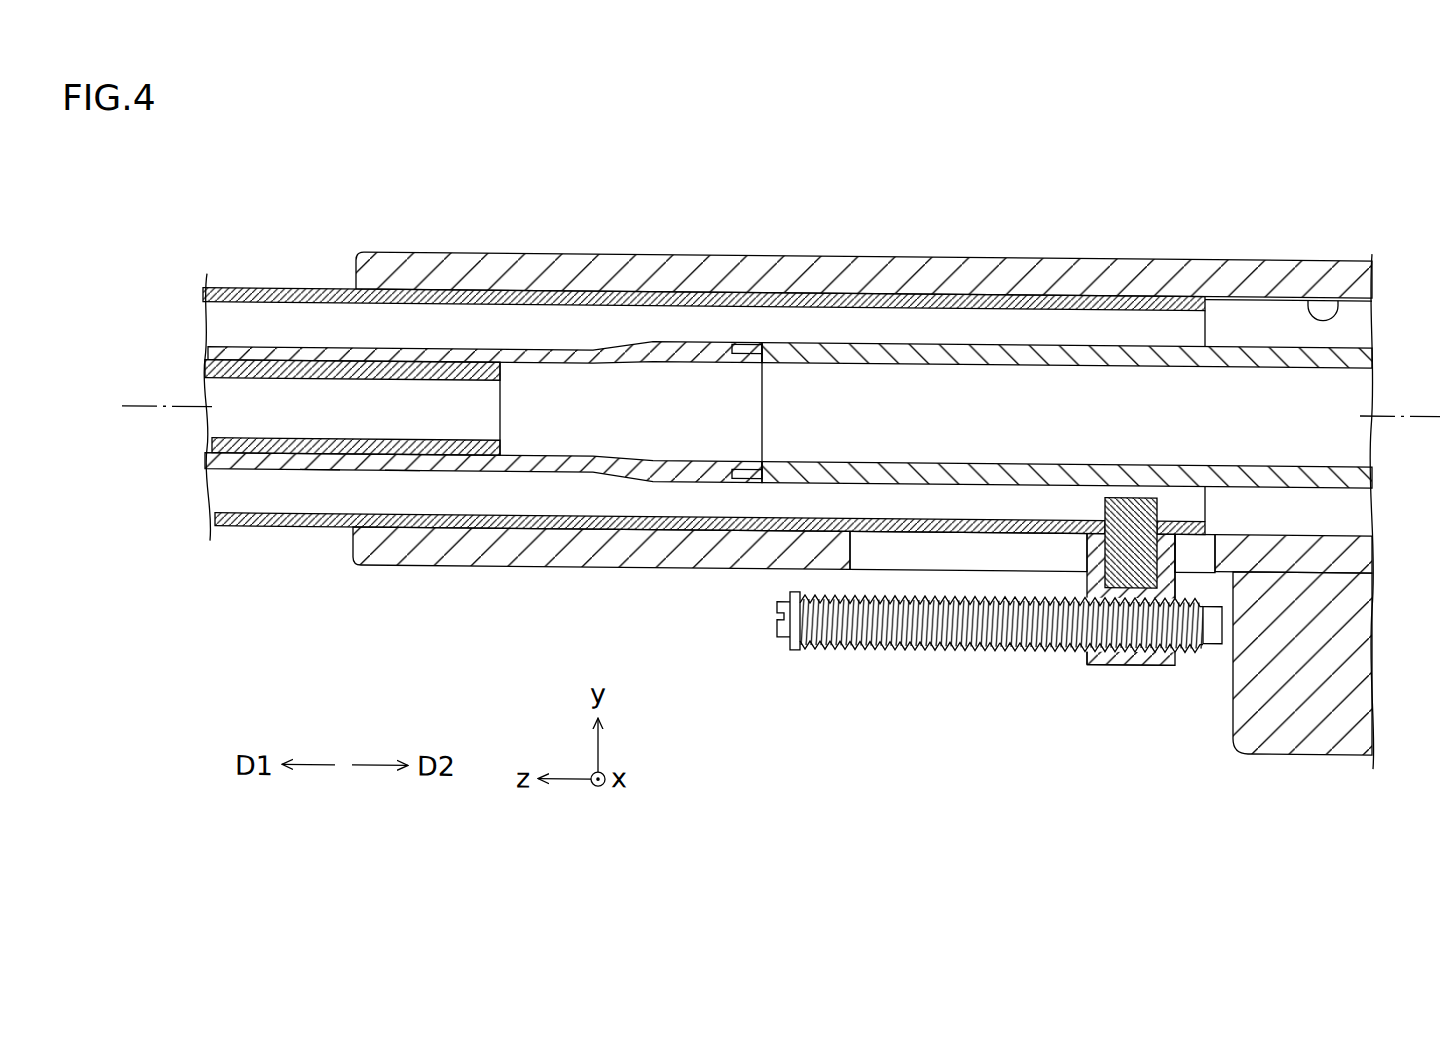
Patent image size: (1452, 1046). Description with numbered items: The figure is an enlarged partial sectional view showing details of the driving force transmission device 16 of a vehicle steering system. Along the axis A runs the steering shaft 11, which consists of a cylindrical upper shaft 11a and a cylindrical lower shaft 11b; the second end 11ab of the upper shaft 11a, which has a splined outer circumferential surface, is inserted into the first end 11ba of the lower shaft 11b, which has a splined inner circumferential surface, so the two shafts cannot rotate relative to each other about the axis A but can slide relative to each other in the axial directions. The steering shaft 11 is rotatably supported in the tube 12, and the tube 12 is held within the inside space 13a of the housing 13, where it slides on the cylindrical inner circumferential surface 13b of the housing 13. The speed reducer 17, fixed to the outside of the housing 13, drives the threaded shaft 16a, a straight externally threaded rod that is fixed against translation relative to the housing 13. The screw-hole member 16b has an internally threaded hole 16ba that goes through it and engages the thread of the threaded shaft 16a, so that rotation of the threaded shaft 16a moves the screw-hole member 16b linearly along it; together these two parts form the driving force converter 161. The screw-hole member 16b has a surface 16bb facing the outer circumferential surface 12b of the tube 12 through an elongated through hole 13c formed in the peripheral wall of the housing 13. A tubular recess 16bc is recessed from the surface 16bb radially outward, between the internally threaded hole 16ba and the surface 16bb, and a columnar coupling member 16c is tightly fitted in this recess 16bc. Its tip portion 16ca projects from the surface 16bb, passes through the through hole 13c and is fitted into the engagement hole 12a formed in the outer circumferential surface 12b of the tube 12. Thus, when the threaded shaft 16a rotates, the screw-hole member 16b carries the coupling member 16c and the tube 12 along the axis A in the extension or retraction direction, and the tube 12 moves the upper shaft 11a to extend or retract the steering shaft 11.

The steering shaft 11 is at (265, 345).
The upper shaft 11a is at (257, 455).
The second end of the upper shaft 11ab is at (520, 456).
The lower shaft 11b is at (403, 471).
The first end of the lower shaft 11ba is at (317, 471).
The tube 12 is at (297, 289).
The engagement hole 12a is at (1145, 491).
The outer circumferential surface of the tube 12b is at (678, 565).
The housing 13 is at (422, 252).
The inside space 13a is at (1260, 310).
The inner circumferential surface of the housing 13b is at (1340, 288).
The through hole 13c is at (870, 523).
The driving force transmission device 16 is at (997, 674).
The threaded shaft 16a is at (952, 645).
The screw-hole member 16b is at (1175, 652).
The internally threaded hole 16ba is at (1113, 641).
The surface of the screw-hole member 16bb is at (1158, 523).
The recess 16bc is at (1142, 588).
The coupling member 16c is at (1105, 491).
The tip portion 16ca is at (1148, 492).
The driving force converter 161 is at (1011, 724).
The speed reducer 17 is at (1347, 750).
The axis A is at (157, 408).